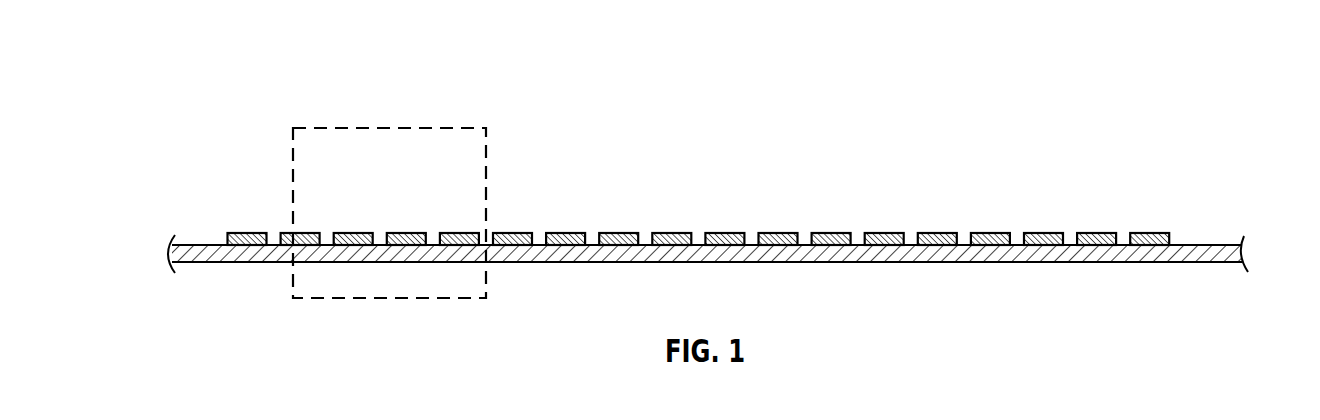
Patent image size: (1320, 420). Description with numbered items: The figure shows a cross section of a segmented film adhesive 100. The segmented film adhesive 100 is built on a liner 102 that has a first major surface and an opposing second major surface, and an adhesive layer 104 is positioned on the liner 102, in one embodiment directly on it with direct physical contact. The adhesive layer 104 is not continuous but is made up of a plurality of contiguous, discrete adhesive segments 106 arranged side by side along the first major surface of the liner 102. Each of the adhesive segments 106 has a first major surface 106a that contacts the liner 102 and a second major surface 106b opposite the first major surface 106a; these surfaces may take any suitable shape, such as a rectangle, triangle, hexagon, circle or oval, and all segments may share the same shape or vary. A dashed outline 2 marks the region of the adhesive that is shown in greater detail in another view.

The segmented film adhesive 100 is at (720, 209).
The liner 102 is at (1183, 244).
The adhesive layer 104 is at (1140, 224).
The adhesive segments 106 is at (772, 233).
The first major surface 106a is at (456, 246).
The second major surface 106b is at (440, 249).
The detail region of FIG. 2 is at (331, 127).